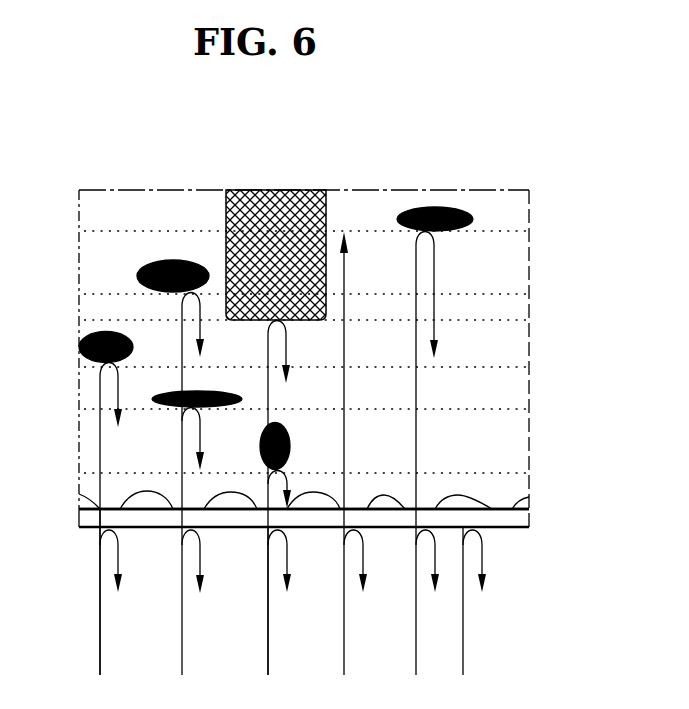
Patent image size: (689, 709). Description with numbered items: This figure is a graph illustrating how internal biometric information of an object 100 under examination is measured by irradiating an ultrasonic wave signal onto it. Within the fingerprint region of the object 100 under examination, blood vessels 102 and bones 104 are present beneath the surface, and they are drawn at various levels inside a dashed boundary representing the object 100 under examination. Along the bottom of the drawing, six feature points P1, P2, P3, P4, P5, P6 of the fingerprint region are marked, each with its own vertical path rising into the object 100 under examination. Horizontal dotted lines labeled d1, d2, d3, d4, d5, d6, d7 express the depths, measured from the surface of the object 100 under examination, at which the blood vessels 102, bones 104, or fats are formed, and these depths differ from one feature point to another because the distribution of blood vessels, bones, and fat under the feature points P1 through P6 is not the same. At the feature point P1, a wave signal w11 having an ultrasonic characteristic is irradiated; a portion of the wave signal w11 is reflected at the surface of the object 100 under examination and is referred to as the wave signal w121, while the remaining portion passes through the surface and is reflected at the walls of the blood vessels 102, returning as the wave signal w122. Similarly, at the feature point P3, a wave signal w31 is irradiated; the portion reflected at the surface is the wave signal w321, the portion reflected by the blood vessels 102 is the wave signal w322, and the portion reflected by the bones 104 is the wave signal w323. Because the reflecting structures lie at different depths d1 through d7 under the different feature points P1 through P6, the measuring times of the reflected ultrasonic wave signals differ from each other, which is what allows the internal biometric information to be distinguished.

The object under examination 100 is at (515, 441).
The blood vessels 102 is at (173, 260).
The bones 104 is at (276, 190).
The feature point P1 is at (104, 535).
The feature point P2 is at (187, 500).
The feature point P3 is at (282, 514).
The feature point P4 is at (349, 469).
The feature point P5 is at (421, 469).
The feature point P6 is at (468, 616).
The depth d1 is at (282, 510).
The depth d2 is at (281, 473).
The depth d3 is at (281, 409).
The depth d4 is at (281, 368).
The depth d5 is at (281, 320).
The depth d6 is at (281, 295).
The depth d7 is at (281, 232).
The wave signal w11 is at (72, 592).
The wave signal w121 is at (131, 573).
The wave signal w122 is at (130, 436).
The wave signal w31 is at (245, 601).
The wave signal w321 is at (298, 573).
The wave signal w322 is at (305, 485).
The wave signal w323 is at (299, 365).